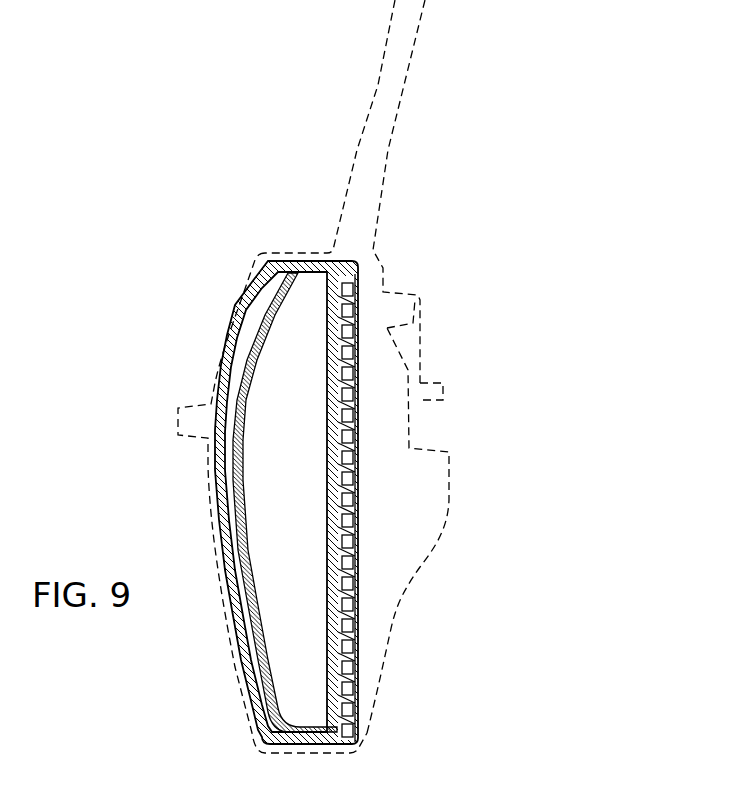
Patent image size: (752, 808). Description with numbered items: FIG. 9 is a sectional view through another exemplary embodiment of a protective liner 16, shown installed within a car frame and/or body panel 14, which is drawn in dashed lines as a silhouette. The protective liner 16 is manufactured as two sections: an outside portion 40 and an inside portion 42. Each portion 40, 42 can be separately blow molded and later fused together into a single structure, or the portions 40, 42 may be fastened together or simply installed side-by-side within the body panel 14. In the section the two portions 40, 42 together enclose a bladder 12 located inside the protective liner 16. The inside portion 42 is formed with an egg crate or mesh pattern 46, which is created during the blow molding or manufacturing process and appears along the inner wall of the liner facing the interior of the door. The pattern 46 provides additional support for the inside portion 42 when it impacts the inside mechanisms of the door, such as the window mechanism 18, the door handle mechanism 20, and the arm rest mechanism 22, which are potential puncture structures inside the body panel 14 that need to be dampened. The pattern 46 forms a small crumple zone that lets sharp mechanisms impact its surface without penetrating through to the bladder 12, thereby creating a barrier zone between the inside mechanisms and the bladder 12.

The bladder 12 is at (265, 317).
The body panel 14 is at (383, 268).
The protective liner 16 is at (333, 503).
The outside portion 40 is at (218, 370).
The inside portion 42 is at (355, 538).
The window mechanism 18 is at (488, 530).
The door handle mechanism 20 is at (488, 530).
The arm rest mechanism 22 is at (393, 486).
The egg crate or mesh pattern 46 is at (345, 695).